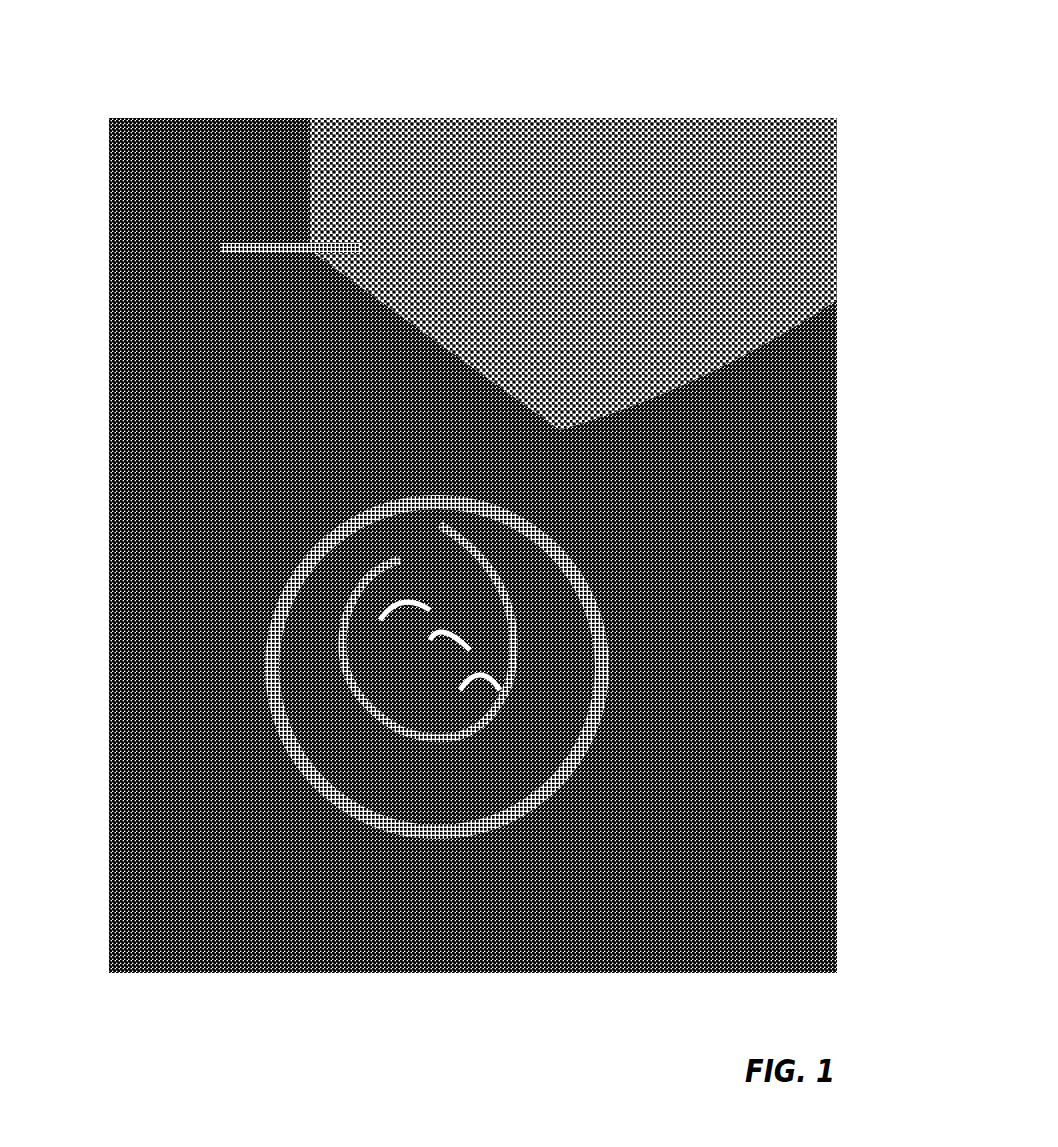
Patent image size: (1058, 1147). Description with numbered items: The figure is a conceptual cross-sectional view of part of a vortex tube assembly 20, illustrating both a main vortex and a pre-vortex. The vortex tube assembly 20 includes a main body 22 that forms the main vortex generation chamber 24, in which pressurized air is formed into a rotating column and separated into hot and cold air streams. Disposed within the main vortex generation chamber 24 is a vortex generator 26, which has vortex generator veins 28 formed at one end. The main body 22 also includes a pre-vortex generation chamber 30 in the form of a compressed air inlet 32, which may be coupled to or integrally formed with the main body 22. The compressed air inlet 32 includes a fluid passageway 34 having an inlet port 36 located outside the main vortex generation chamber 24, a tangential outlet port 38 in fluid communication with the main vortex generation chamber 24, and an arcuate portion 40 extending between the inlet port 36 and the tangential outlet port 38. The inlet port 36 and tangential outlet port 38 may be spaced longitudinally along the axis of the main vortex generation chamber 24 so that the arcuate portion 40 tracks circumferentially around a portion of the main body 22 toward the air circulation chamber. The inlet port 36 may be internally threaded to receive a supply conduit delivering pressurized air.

The vortex tube assembly 20 is at (673, 107).
The main body 22 is at (182, 563).
The main vortex generation chamber 24 is at (320, 548).
The vortex generator 26 is at (318, 638).
The vortex generator veins 28 is at (327, 738).
The pre-vortex generation chamber 30 is at (767, 628).
The compressed air inlet 32 is at (322, 210).
The fluid passageway 34 is at (752, 500).
The inlet port 36 is at (348, 274).
The tangential outlet port 38 is at (420, 835).
The arcuate portion 40 is at (720, 650).